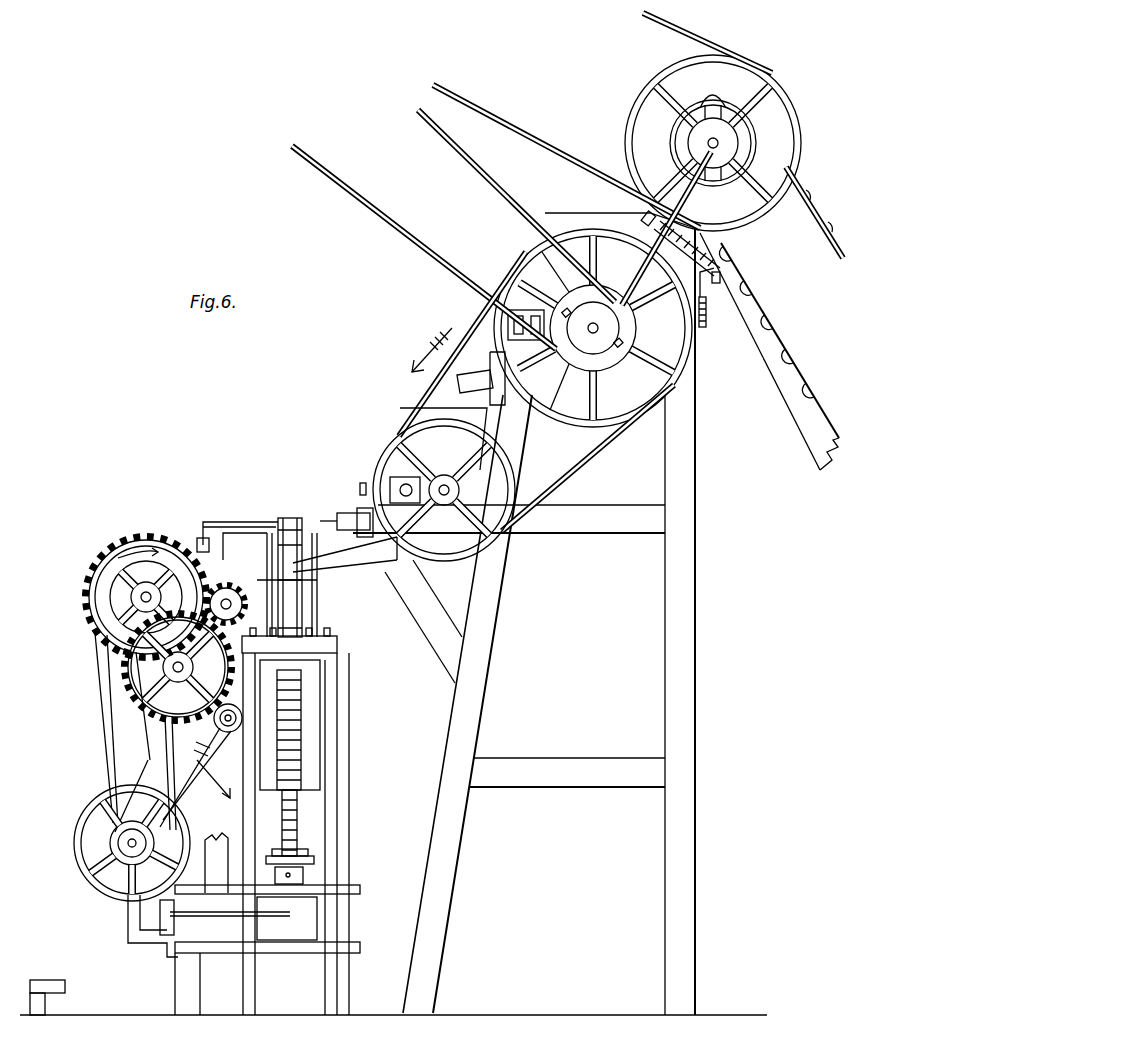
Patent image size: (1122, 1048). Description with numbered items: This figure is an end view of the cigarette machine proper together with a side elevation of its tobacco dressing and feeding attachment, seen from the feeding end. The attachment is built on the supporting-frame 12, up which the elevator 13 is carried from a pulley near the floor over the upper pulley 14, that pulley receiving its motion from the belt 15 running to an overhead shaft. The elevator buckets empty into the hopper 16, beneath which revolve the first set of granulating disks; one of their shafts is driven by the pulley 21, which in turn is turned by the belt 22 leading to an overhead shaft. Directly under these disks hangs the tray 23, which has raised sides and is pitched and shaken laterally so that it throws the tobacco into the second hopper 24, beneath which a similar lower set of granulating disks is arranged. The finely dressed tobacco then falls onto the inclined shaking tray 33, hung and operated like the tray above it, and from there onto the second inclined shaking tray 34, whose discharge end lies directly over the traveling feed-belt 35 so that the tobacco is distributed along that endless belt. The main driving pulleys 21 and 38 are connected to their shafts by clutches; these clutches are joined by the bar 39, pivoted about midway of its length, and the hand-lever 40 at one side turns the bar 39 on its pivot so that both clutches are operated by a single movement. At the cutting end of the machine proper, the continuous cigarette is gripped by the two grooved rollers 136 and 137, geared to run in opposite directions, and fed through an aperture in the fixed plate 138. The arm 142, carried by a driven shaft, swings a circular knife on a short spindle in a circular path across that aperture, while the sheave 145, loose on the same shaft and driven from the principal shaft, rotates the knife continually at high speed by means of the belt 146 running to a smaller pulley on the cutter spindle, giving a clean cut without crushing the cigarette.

The supporting-frame 12 is at (544, 614).
The elevator 13 is at (816, 220).
The pulley 14 is at (712, 176).
The belt 15 is at (638, 132).
The hopper 16 is at (593, 309).
The pulley 21 is at (593, 328).
The belt 22 is at (453, 229).
The tray 23 is at (475, 381).
The second hopper 24 is at (444, 484).
The shaking tray 33 is at (350, 512).
The shaking tray 34 is at (345, 554).
The feed-belt 35 is at (300, 605).
The main driving-pulley 38 is at (650, 84).
The bar 39 is at (662, 228).
The hand-lever 40 is at (702, 328).
The grooved roller 136 is at (274, 875).
The grooved roller 137 is at (312, 868).
The plate 138 is at (300, 882).
The arm 142 is at (219, 730).
The sheave 145 is at (78, 848).
The belt 146 is at (163, 732).